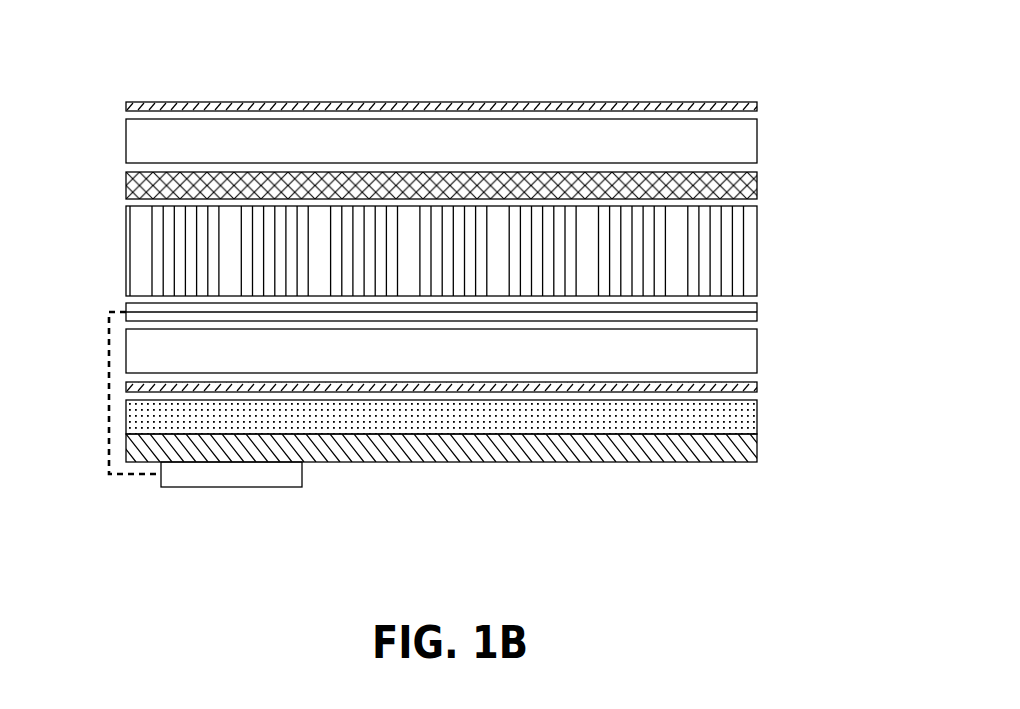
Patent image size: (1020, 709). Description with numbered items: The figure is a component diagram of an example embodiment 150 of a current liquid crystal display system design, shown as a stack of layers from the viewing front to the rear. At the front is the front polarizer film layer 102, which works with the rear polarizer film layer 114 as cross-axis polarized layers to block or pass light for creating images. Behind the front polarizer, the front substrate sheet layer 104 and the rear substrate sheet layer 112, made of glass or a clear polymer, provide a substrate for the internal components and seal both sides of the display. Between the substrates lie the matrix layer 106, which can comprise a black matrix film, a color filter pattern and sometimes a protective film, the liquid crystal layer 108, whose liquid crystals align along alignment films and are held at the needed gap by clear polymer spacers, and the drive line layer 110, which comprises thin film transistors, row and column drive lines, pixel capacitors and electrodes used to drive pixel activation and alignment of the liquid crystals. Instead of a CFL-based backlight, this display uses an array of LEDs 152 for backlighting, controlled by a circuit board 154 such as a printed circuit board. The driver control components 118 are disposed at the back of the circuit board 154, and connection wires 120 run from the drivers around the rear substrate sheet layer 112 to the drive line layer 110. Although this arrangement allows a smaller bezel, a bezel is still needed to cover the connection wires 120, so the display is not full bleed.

The example embodiment of LCD system design 150 is at (152, 65).
The front polarizer film layer 102 is at (757, 104).
The front substrate sheet layer 104 is at (757, 141).
The matrix layer 106 is at (757, 186).
The liquid crystal layer 108 is at (757, 250).
The drive line layer 110 is at (757, 310).
The rear substrate sheet layer 112 is at (757, 347).
The rear polarizer film layer 114 is at (757, 383).
The array of LEDs 152 is at (757, 413).
The circuit board 154 is at (757, 450).
The driver components 118 is at (240, 487).
The connection wires 120 is at (133, 474).